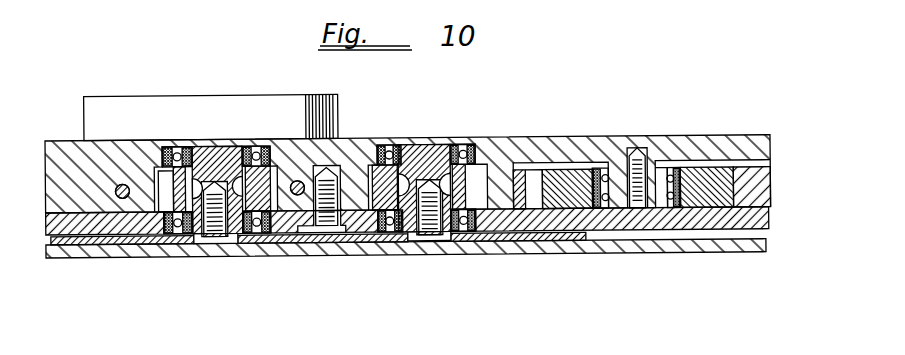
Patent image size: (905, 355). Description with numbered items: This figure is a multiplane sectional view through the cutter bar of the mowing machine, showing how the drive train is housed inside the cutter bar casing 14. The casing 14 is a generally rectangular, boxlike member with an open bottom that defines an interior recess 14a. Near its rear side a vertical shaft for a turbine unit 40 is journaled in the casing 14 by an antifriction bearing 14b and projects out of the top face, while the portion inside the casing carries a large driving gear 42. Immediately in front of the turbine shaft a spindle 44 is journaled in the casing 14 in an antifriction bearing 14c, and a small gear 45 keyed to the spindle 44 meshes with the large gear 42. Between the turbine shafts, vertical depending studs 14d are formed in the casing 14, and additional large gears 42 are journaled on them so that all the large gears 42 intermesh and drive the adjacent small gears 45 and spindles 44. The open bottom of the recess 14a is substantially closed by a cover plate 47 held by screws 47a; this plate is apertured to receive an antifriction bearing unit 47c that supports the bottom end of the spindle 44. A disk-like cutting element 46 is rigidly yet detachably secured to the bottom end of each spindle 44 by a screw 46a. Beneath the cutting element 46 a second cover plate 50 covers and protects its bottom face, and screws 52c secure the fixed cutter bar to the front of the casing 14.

The cutter bar casing 14 is at (567, 140).
The interior recess 14a is at (591, 166).
The antifriction bearing 14b is at (669, 170).
The antifriction bearing 14c is at (177, 156).
The vertical depending stud 14d is at (651, 202).
The turbine unit 40 is at (262, 95).
The large driving gear 42 is at (537, 180).
The spindle 44 is at (215, 176).
The small gear 45 is at (165, 188).
The cutting element 46 is at (183, 239).
The screw 46a is at (226, 206).
The cover plate 47 is at (97, 226).
The screw 47a is at (333, 190).
The antifriction bearing unit 47c is at (177, 229).
The cover plate 50 is at (737, 246).
The screw 52c is at (125, 199).